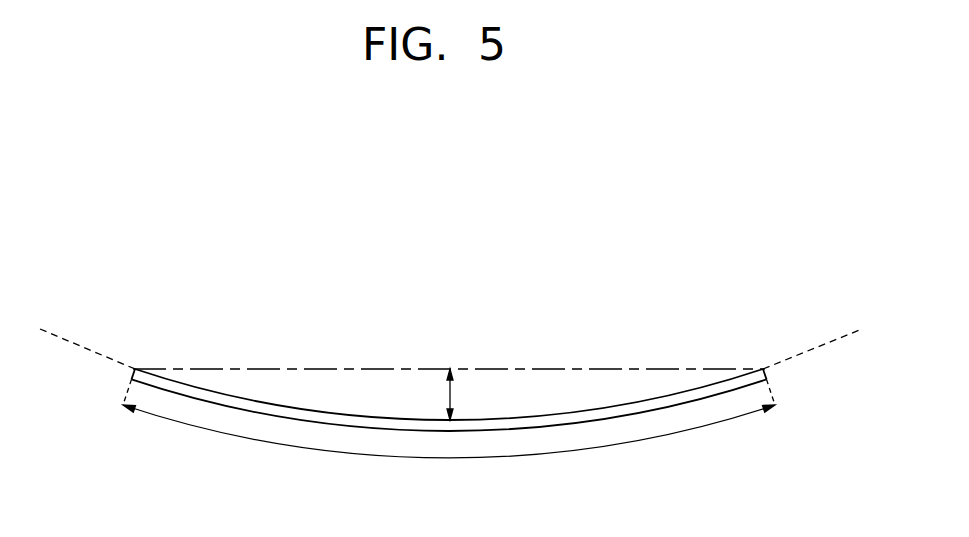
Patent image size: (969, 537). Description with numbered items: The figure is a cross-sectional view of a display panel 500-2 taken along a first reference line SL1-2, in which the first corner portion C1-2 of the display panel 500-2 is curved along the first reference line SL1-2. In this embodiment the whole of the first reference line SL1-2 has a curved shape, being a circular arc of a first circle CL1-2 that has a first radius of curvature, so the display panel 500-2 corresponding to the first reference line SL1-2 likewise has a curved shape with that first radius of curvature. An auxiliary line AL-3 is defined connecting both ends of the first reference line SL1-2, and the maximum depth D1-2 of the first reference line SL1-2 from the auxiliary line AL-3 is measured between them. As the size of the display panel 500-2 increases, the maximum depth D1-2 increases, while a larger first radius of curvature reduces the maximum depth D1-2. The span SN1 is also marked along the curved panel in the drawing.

The display panel 500-2 is at (458, 365).
The first reference line SL1-2 is at (342, 412).
The auxiliary line AL-3 is at (626, 368).
The first circle CL1-2 is at (836, 340).
The first corner portion C1-2 is at (133, 368).
The maximum depth D1-2 is at (476, 394).
The curved span length SN1 is at (449, 430).